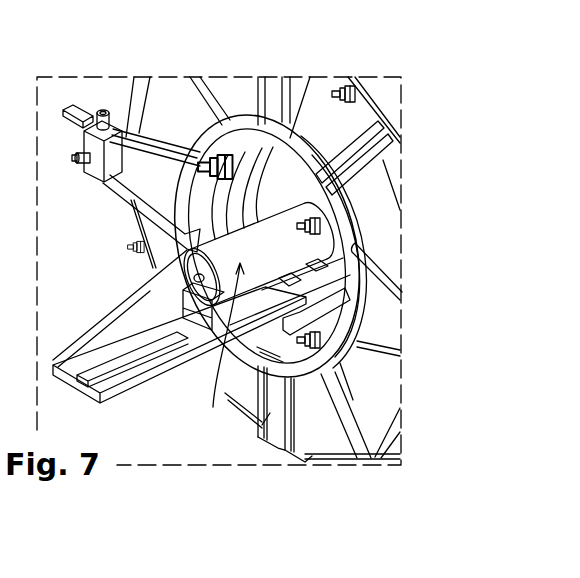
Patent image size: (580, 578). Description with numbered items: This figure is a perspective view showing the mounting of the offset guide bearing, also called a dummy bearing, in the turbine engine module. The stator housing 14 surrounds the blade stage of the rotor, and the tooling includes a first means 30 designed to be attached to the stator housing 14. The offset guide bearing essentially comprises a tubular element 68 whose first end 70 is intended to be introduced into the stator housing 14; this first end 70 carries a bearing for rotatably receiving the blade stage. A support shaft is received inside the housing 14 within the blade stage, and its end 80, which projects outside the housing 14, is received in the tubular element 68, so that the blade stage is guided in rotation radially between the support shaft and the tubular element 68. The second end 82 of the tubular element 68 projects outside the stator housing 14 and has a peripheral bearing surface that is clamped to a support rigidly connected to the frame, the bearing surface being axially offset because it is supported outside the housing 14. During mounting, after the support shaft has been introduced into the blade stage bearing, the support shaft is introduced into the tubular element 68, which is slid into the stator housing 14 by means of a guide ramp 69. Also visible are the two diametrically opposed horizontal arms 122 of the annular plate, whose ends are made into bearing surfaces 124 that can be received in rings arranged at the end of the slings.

The stator housing 14 is at (333, 133).
The first means 30 is at (270, 413).
The tubular element 68 is at (220, 348).
The guide ramp 69 is at (117, 382).
The first end 70 is at (305, 206).
The end of support shaft 80 is at (175, 285).
The second end 82 is at (152, 256).
The horizontal arms 122 is at (85, 106).
The bearing surfaces 124 is at (82, 124).